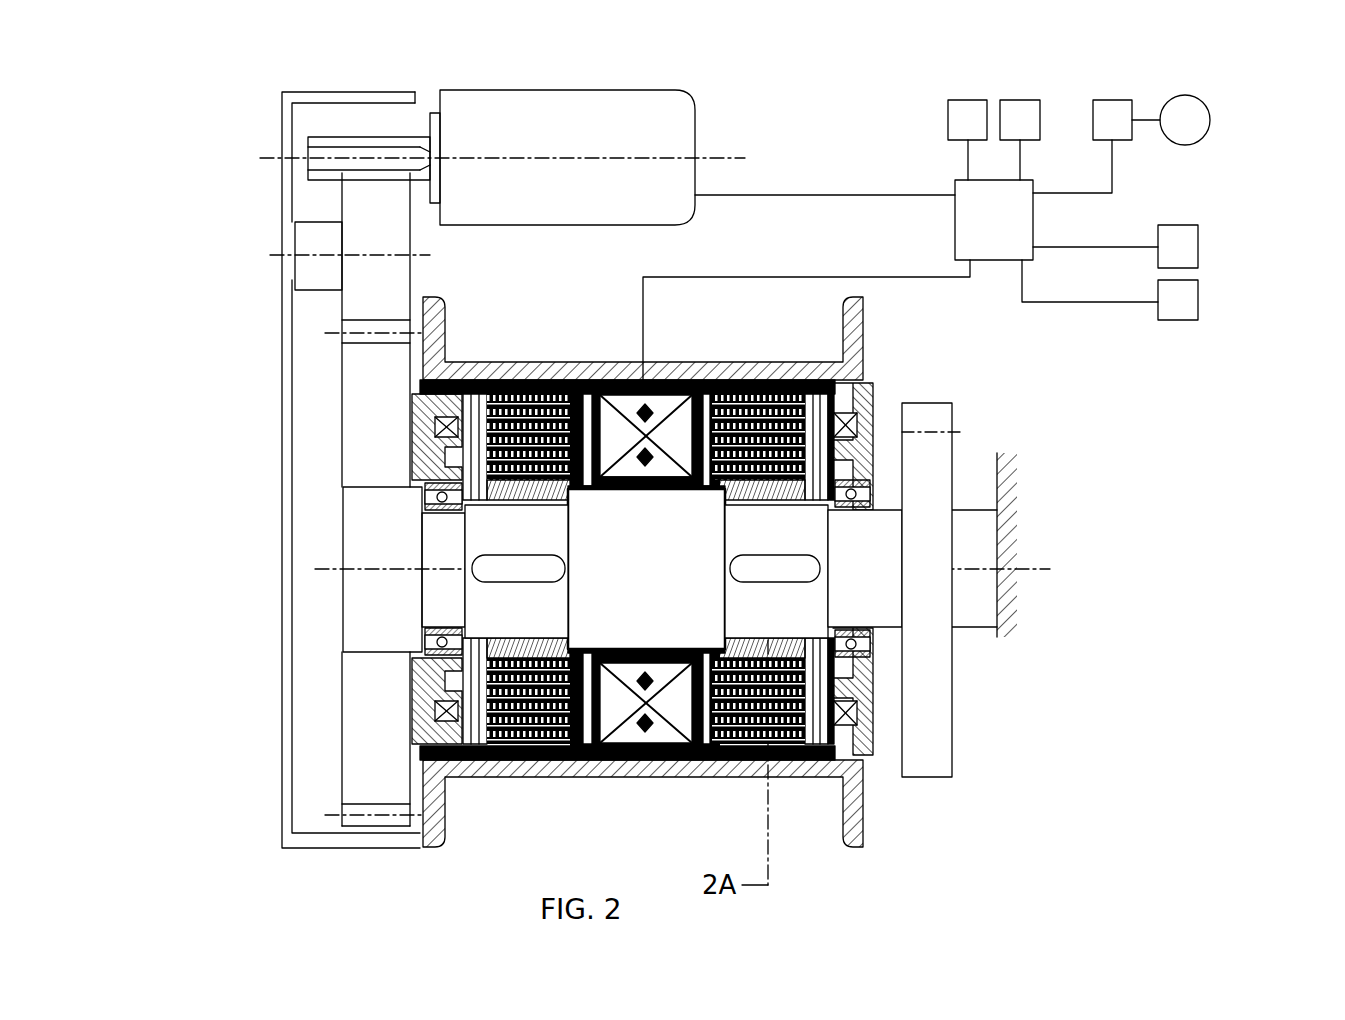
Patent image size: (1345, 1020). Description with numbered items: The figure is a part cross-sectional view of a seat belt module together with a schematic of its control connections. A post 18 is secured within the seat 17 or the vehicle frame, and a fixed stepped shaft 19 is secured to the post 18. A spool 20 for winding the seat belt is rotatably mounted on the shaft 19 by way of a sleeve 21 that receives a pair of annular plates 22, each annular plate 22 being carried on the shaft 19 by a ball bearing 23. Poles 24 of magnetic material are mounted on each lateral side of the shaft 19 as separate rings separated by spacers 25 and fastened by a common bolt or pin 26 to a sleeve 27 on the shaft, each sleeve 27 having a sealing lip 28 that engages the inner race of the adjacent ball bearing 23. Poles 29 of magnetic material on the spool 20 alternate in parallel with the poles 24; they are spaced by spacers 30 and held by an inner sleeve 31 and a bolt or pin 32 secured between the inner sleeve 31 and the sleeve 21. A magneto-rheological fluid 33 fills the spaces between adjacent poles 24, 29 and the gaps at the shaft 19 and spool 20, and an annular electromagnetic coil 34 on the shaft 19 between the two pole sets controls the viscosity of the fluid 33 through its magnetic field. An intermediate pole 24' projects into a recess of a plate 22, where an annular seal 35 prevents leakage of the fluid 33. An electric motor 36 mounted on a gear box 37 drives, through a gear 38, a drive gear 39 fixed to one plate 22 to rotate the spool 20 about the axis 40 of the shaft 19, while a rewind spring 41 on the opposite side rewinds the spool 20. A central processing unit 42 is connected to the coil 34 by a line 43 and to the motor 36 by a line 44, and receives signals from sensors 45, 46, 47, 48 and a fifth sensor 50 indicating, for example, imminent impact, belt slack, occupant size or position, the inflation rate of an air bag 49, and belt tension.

The seat 17 is at (1010, 605).
The post 18 is at (982, 507).
The fixed stepped shaft 19 is at (872, 595).
The spool 20 is at (657, 767).
The sleeve 21 is at (545, 380).
The annular plate 22 is at (420, 417).
The ball bearing 23 is at (427, 509).
The pole 24 is at (646, 569).
The intermediate pole 24' is at (605, 544).
The spacer 25 is at (492, 500).
The bolt or pin 26 is at (490, 378).
The sleeve 27 is at (517, 502).
The sealing lip 28 is at (497, 502).
The pole 29 is at (575, 493).
The spacer 30 is at (718, 493).
The inner sleeve 31 is at (668, 490).
The bolt or pin 32 is at (598, 378).
The magneto-rheological fluid 33 is at (530, 500).
The electromagnetic coil 34 is at (630, 728).
The annular seal 35 is at (431, 724).
The electric motor 36 is at (575, 130).
The gear box 37 is at (285, 142).
The gear 38 is at (353, 228).
The drive gear 39 is at (357, 409).
The axis 40 is at (329, 570).
The rewind spring 41 is at (970, 522).
The central processing unit 42 is at (990, 247).
The line 43 is at (875, 277).
The line 44 is at (875, 195).
The sensor 45 is at (957, 117).
The sensor 46 is at (1010, 117).
The sensor 47 is at (1187, 248).
The sensor 48 is at (1100, 117).
The air bag 49 is at (1188, 122).
The sensor 50 is at (1187, 303).